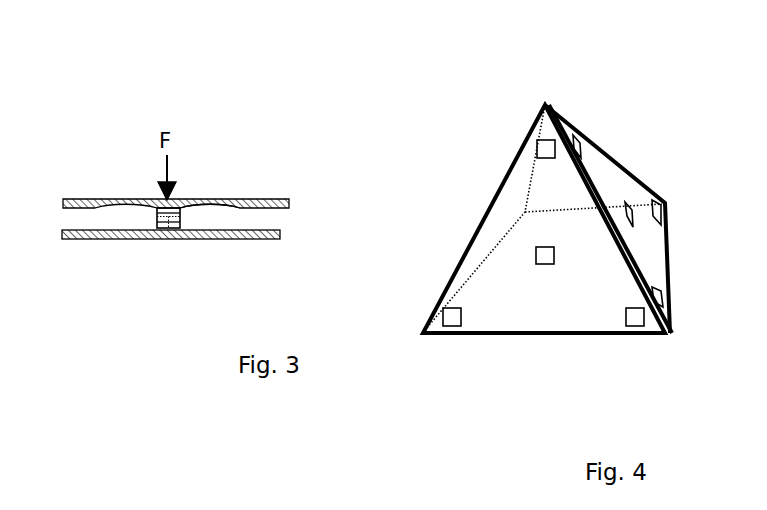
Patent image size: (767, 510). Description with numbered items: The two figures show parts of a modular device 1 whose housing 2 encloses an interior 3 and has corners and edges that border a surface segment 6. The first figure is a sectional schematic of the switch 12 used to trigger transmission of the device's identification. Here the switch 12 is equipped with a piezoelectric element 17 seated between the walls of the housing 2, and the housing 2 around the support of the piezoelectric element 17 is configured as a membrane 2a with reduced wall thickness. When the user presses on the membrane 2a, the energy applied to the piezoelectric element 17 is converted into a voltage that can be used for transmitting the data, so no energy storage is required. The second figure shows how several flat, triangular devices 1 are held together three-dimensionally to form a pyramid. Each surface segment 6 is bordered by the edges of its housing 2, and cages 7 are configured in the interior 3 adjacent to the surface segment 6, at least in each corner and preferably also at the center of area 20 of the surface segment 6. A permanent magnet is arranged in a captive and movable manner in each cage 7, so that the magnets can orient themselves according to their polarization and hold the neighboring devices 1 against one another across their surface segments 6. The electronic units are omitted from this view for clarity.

In FIG. 4, the device 1 is at (570, 253).
In FIG. 3, the housing 2 is at (73, 238).
In FIG. 3, the membrane 2a is at (216, 198).
In FIG. 3, the interior 3 is at (113, 220).
In FIG. 4, the surface segment 6 is at (530, 312).
In FIG. 4, the cage 7 is at (626, 322).
In FIG. 3, the switch 12 is at (172, 262).
In FIG. 3, the piezoelectric element 17 is at (167, 239).
In FIG. 4, the center of area 20 is at (545, 264).